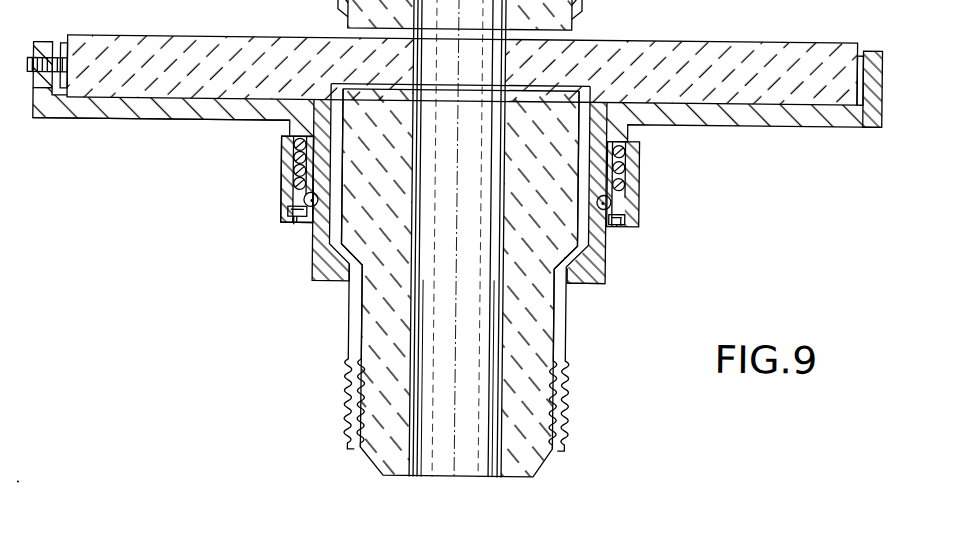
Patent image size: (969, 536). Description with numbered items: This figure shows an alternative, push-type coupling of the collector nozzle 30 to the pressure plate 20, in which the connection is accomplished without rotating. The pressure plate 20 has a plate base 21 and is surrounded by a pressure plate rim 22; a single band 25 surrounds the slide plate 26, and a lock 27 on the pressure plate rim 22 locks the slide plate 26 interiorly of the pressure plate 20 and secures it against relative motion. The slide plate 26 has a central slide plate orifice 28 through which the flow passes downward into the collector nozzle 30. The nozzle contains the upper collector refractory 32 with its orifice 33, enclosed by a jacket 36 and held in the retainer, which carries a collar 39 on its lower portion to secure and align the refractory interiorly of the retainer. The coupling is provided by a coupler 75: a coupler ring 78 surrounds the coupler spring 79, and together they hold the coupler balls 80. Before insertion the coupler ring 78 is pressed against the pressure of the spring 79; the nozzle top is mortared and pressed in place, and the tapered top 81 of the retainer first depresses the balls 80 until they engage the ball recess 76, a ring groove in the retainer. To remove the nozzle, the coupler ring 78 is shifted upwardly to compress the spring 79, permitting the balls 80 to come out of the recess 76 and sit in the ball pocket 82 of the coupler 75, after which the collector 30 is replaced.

The pressure plate 20 is at (157, 127).
The plate base 21 is at (213, 121).
The pressure plate rim 22 is at (33, 94).
The band 25 is at (63, 47).
The slide plate 26 is at (745, 76).
The lock 27 is at (27, 66).
The slide plate orifice 28 is at (469, 74).
The collector nozzle 30 is at (582, 415).
The upper collector refractory 32 is at (368, 312).
The orifice 33 is at (467, 355).
The jacket 36 is at (569, 344).
The collar 39 is at (601, 284).
The coupler 75 is at (613, 201).
The ball recess 76 is at (641, 218).
The coupler ring 78 is at (641, 150).
The coupler spring 79 is at (627, 175).
The coupler balls 80 is at (303, 206).
The tapered top 81 is at (317, 99).
The ball pocket 82 is at (298, 227).